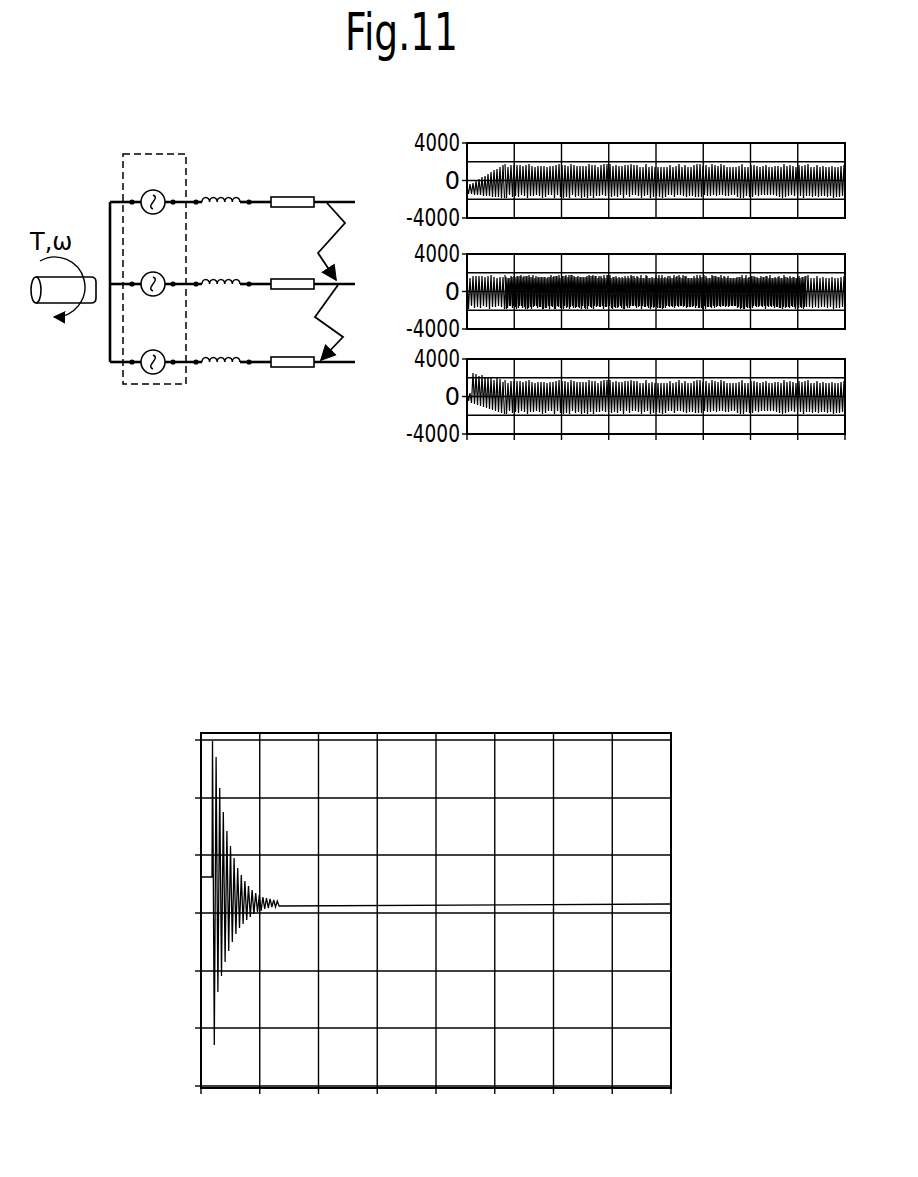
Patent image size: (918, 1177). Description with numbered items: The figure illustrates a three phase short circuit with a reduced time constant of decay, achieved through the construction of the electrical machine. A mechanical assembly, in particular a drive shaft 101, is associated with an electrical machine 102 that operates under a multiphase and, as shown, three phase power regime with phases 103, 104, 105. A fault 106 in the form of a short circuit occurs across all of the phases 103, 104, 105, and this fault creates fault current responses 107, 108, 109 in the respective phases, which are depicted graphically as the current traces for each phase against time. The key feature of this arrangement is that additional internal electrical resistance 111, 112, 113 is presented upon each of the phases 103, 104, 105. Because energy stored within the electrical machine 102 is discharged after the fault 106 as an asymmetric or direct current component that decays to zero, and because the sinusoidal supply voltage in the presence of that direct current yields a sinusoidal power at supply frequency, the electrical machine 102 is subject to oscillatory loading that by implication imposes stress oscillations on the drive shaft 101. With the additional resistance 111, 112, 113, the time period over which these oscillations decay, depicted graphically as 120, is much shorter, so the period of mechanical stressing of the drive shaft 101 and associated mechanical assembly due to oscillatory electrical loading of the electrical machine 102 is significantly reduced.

The drive shaft 101 is at (79, 293).
The electrical machine 102 is at (177, 162).
The first phase 103 is at (153, 190).
The second phase 104 is at (153, 272).
The third phase 105 is at (153, 350).
The three phase short circuit fault 106 is at (330, 241).
The fault current response of first phase 107 is at (680, 172).
The fault current response of second phase 108 is at (672, 277).
The fault current response of third phase 109 is at (654, 382).
The additional internal electrical resistance of first phase 111 is at (272, 197).
The additional internal electrical resistance of second phase 112 is at (297, 289).
The additional internal electrical resistance of third phase 113 is at (293, 366).
The oscillation decay time period 120 is at (233, 882).